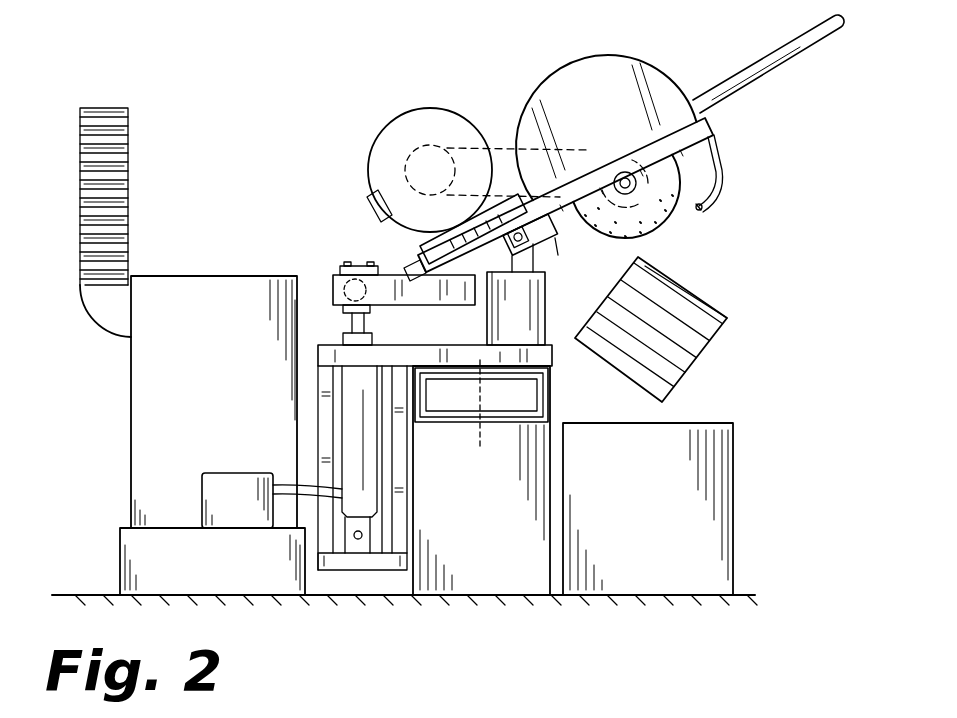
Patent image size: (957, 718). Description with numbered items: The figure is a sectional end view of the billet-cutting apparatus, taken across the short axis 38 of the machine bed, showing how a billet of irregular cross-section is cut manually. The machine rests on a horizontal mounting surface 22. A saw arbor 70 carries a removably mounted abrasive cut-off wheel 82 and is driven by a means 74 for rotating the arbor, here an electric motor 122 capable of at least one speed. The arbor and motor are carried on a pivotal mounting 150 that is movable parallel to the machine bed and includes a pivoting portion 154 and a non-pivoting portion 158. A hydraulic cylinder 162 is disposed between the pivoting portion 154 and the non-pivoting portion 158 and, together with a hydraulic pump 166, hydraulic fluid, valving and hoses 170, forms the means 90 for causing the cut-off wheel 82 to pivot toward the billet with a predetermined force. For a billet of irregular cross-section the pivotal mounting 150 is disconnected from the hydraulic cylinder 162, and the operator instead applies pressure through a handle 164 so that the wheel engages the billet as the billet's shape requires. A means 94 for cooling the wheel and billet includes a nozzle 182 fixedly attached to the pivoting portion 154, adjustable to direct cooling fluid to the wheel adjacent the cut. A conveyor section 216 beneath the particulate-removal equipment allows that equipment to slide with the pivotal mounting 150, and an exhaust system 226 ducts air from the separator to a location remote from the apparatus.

The horizontal mounting surface 22 is at (548, 360).
The short axis 38 is at (482, 442).
The saw arbor 70 is at (626, 170).
The means for rotating the saw arbor 74 is at (372, 158).
The abrasive cut-off wheel 82 is at (712, 136).
The means for causing the cut-off wheel to pivot toward the billet 90 is at (322, 330).
The means for cooling the abrasive cut-off wheel and the billet 94 is at (714, 168).
The electric motor 122 is at (425, 122).
The pivotal mounting 150 is at (566, 232).
The pivoting portion 154 is at (420, 262).
The non-pivoting portion 158 is at (398, 356).
The hydraulic cylinder 162 is at (350, 428).
The handle 164 is at (757, 76).
The hydraulic pump 166 is at (221, 492).
The hoses 170 is at (310, 507).
The nozzle 182 is at (700, 207).
The conveyor section 216 is at (120, 528).
The exhaust system 226 is at (114, 182).